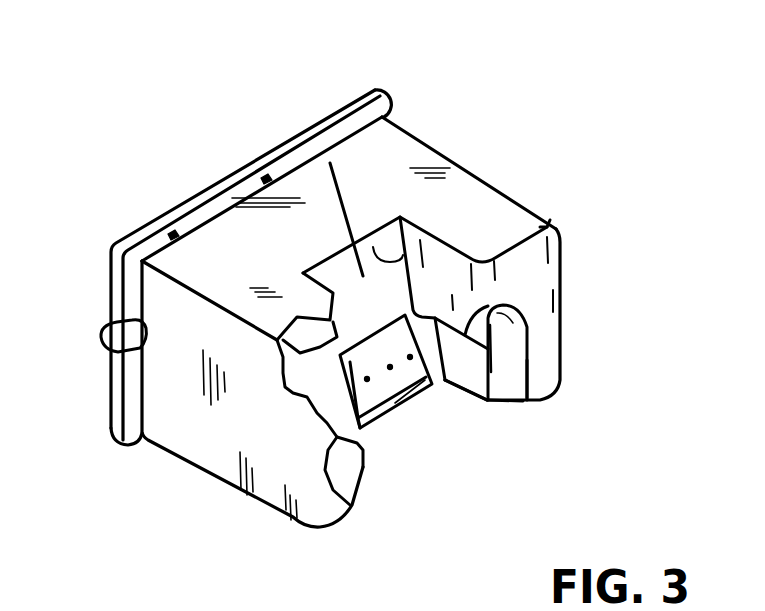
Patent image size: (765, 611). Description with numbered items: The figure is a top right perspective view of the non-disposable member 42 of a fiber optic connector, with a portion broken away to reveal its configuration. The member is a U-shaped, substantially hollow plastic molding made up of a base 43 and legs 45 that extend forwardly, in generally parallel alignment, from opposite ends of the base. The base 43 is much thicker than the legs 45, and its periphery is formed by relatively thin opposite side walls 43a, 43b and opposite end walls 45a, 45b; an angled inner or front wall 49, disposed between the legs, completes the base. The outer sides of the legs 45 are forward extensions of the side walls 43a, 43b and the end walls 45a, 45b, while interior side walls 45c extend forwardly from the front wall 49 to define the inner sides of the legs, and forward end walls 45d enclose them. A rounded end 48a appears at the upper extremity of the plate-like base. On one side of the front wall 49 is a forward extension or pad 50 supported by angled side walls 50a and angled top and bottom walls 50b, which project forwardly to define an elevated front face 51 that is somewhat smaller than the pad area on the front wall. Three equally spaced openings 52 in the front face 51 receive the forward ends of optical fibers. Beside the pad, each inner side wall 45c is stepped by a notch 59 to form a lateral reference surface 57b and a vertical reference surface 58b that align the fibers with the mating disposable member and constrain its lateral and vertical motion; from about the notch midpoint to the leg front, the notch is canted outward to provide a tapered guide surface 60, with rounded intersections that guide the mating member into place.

The non-disposable member 42 is at (442, 134).
The base 43 is at (356, 160).
The side wall 43a is at (160, 328).
The side wall 43b is at (208, 466).
The legs 45 is at (495, 223).
The end wall 45a is at (212, 430).
The end wall 45b is at (490, 181).
The interior side wall 45c is at (447, 273).
The forward end wall 45d is at (537, 394).
The rounded end of mounting plate 48a is at (372, 100).
The front wall 49 is at (330, 162).
The pad 50 is at (393, 393).
The angled side walls 50a is at (363, 448).
The angled top and bottom walls 50b is at (338, 256).
The front face 51 is at (405, 289).
The openings 52 is at (367, 379).
The horizontal reference surface 57b is at (528, 384).
The vertical reference surface 58b is at (373, 247).
The notch 59 is at (468, 336).
The tapered guide surface 60 is at (517, 404).